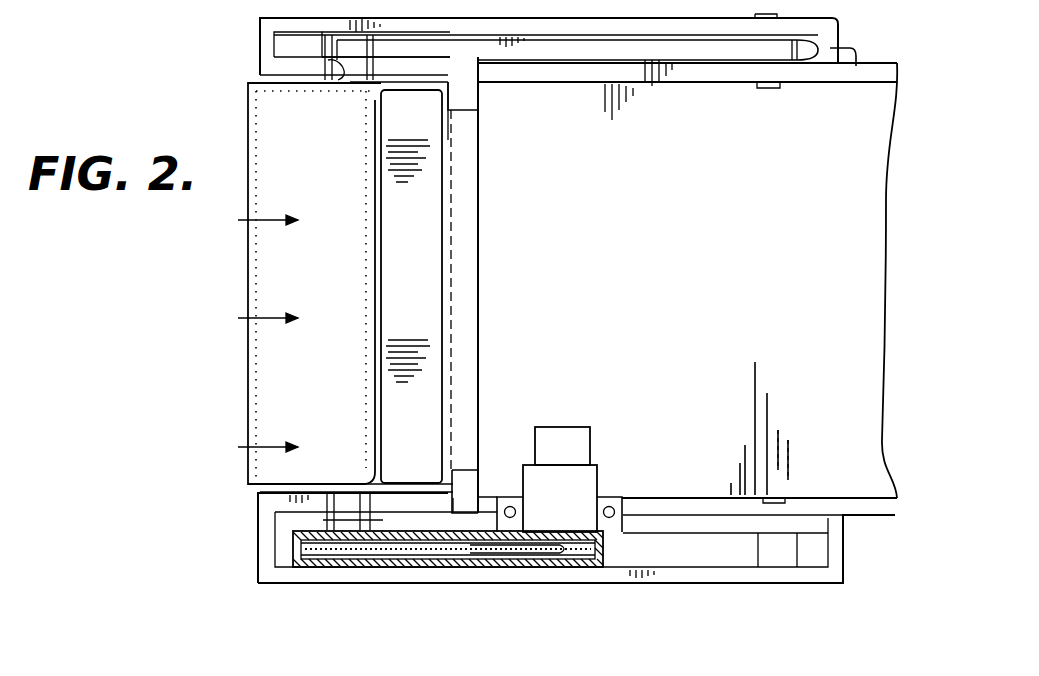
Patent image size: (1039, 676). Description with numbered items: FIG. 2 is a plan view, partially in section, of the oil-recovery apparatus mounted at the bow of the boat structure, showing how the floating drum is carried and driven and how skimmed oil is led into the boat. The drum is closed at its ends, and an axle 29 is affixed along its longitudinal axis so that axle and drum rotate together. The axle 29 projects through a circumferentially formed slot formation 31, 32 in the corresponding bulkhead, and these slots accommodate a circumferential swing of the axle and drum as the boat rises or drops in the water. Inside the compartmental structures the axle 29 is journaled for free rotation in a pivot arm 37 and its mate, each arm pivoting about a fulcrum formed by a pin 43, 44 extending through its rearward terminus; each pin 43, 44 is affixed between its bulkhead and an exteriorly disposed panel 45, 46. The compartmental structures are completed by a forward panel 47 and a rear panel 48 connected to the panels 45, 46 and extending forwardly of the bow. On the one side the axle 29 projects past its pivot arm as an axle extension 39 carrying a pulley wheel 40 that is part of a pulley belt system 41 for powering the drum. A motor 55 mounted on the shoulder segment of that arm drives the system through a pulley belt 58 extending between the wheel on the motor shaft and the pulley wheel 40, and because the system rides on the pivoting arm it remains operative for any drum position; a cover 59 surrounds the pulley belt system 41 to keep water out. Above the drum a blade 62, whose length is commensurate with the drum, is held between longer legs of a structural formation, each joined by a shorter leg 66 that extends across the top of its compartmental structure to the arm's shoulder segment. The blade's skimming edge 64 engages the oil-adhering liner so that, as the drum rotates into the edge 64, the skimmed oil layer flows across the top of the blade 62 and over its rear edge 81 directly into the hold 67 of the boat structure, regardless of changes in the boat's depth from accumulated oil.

The axle 29 is at (360, 88).
The slot formation 31 is at (345, 85).
The slot formation 32 is at (345, 493).
The pivot arm 37 is at (628, 47).
The axle extension 39 is at (352, 536).
The pulley wheel 40 is at (388, 536).
The pulley belt system 41 is at (440, 533).
The pin 43 is at (774, 90).
The pin 44 is at (782, 494).
The exteriorly disposed panel 45 is at (706, 30).
The exteriorly disposed panel 46 is at (612, 583).
The forward panel 47 is at (260, 57).
The rear panel 48 is at (856, 66).
The motor 55 is at (588, 472).
The pulley belt 58 is at (484, 533).
The cover 59 is at (502, 533).
The blade 62 is at (423, 195).
The skimming edge 64 is at (381, 277).
The shorter leg 66 is at (482, 80).
The hold 67 is at (760, 298).
The rear edge 81 is at (480, 246).